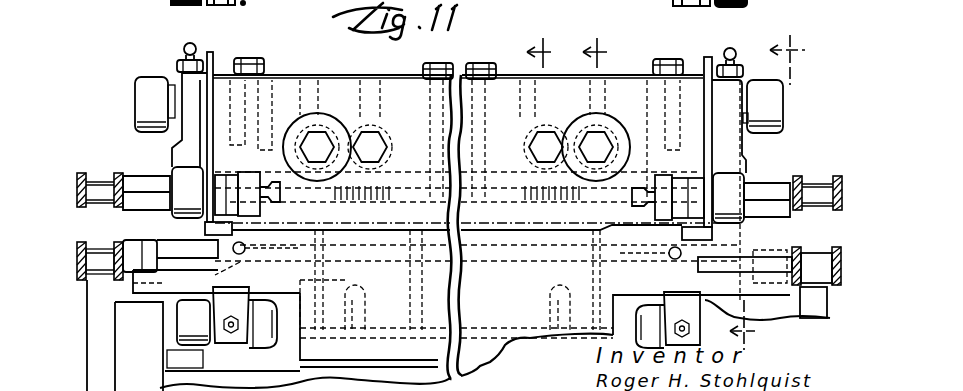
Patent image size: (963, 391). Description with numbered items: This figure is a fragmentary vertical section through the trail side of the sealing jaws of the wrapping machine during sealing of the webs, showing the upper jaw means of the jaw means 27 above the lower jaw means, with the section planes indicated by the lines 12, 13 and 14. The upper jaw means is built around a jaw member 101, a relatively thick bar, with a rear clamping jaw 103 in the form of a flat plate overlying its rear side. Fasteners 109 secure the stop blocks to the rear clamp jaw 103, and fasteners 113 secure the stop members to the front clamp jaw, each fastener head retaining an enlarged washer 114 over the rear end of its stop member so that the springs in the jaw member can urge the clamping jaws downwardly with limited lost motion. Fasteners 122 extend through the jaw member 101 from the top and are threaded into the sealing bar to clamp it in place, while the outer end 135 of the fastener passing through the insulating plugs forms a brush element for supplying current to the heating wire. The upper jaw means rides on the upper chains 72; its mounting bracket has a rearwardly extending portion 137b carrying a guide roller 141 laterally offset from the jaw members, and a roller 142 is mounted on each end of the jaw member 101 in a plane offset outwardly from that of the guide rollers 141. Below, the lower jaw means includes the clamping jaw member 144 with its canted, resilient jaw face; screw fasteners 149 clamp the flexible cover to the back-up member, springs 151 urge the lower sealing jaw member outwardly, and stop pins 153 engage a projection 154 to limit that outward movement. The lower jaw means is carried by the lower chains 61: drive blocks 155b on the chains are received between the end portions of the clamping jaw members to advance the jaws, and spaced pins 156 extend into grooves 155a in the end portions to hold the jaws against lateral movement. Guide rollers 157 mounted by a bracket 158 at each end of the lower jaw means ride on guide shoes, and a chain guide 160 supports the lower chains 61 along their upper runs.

The section line 12- 12 is at (550, 49).
The section line 13- 13 is at (603, 49).
The section line 14- 14 is at (779, 189).
The jaw means 27 is at (278, 50).
The lower chains 61 is at (92, 230).
The upper tracks or chains 72 is at (99, 168).
The jaw member 101 is at (290, 75).
The rear clamping jaw 103 is at (402, 90).
The fasteners 109 is at (380, 145).
The fasteners 113 is at (590, 140).
The enlarged washer 114 is at (626, 152).
The fasteners 122 is at (448, 68).
The outer end of fastener (brush element) 135 is at (246, 60).
The rearwardly extending portion of jaw mounting bracket 137b is at (207, 146).
The guide roller 141 is at (185, 187).
The roller 142 is at (148, 80).
The clamping jaw member 144 is at (518, 302).
The screw fasteners 149 is at (323, 278).
The springs 151 is at (353, 307).
The stop pins 153 is at (233, 248).
The projection 154 is at (235, 264).
The grooves 155a is at (170, 262).
The drive blocks 155b is at (785, 250).
The spaced pins 156 is at (142, 262).
The guide rollers 157 is at (185, 322).
The bracket 158 is at (238, 306).
The chain guide 160 is at (96, 274).